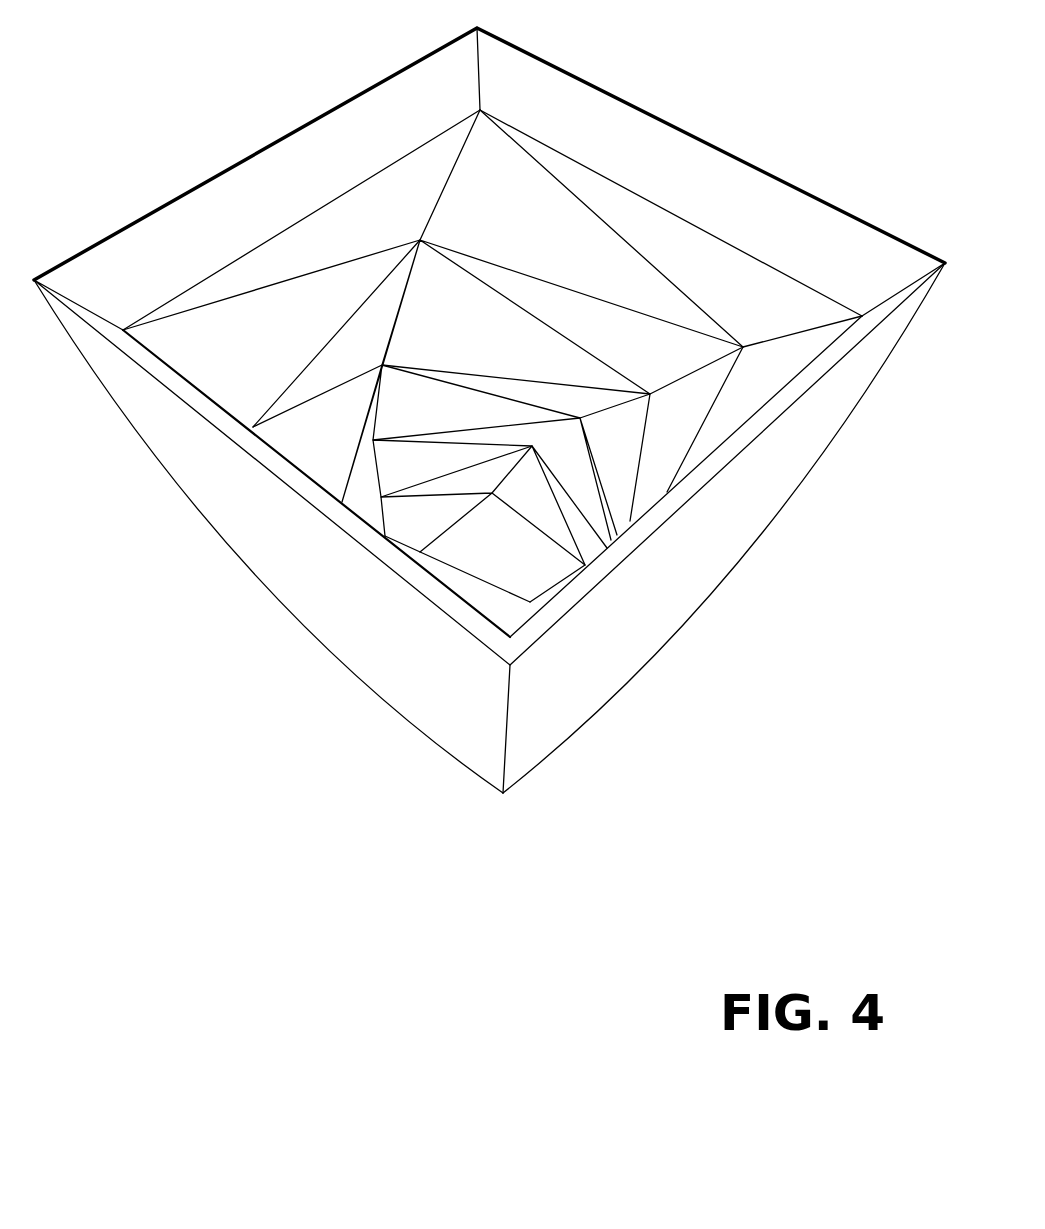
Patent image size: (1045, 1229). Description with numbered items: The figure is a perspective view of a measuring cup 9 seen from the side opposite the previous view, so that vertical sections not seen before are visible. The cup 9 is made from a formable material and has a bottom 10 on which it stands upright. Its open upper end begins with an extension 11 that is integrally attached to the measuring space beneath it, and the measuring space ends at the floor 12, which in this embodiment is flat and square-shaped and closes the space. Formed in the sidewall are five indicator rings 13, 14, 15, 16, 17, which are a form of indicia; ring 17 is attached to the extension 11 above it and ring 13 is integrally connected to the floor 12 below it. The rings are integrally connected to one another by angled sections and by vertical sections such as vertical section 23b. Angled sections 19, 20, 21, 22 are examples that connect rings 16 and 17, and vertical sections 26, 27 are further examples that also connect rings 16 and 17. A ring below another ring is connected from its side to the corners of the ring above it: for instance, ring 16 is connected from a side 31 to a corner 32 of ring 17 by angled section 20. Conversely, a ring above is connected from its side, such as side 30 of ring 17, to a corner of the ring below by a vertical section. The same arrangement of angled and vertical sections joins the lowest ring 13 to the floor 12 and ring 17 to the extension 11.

The cup 9 is at (193, 588).
The bottom 10 is at (600, 702).
The extension 11 is at (688, 487).
The floor 12 is at (505, 566).
The indicator ring 13 is at (392, 532).
The indicator ring 14 is at (378, 475).
The indicator ring 15 is at (372, 403).
The indicator ring 16 is at (362, 293).
The indicator ring 17 is at (473, 112).
The angled section 19 is at (727, 418).
The angled section 20 is at (452, 582).
The angled section 21 is at (307, 305).
The angled section 22 is at (610, 272).
The vertical section 23b is at (403, 170).
The vertical section 26 is at (337, 210).
The vertical section 27 is at (710, 248).
The side 30 is at (628, 528).
The side 31 is at (452, 563).
The corner 32 is at (512, 638).